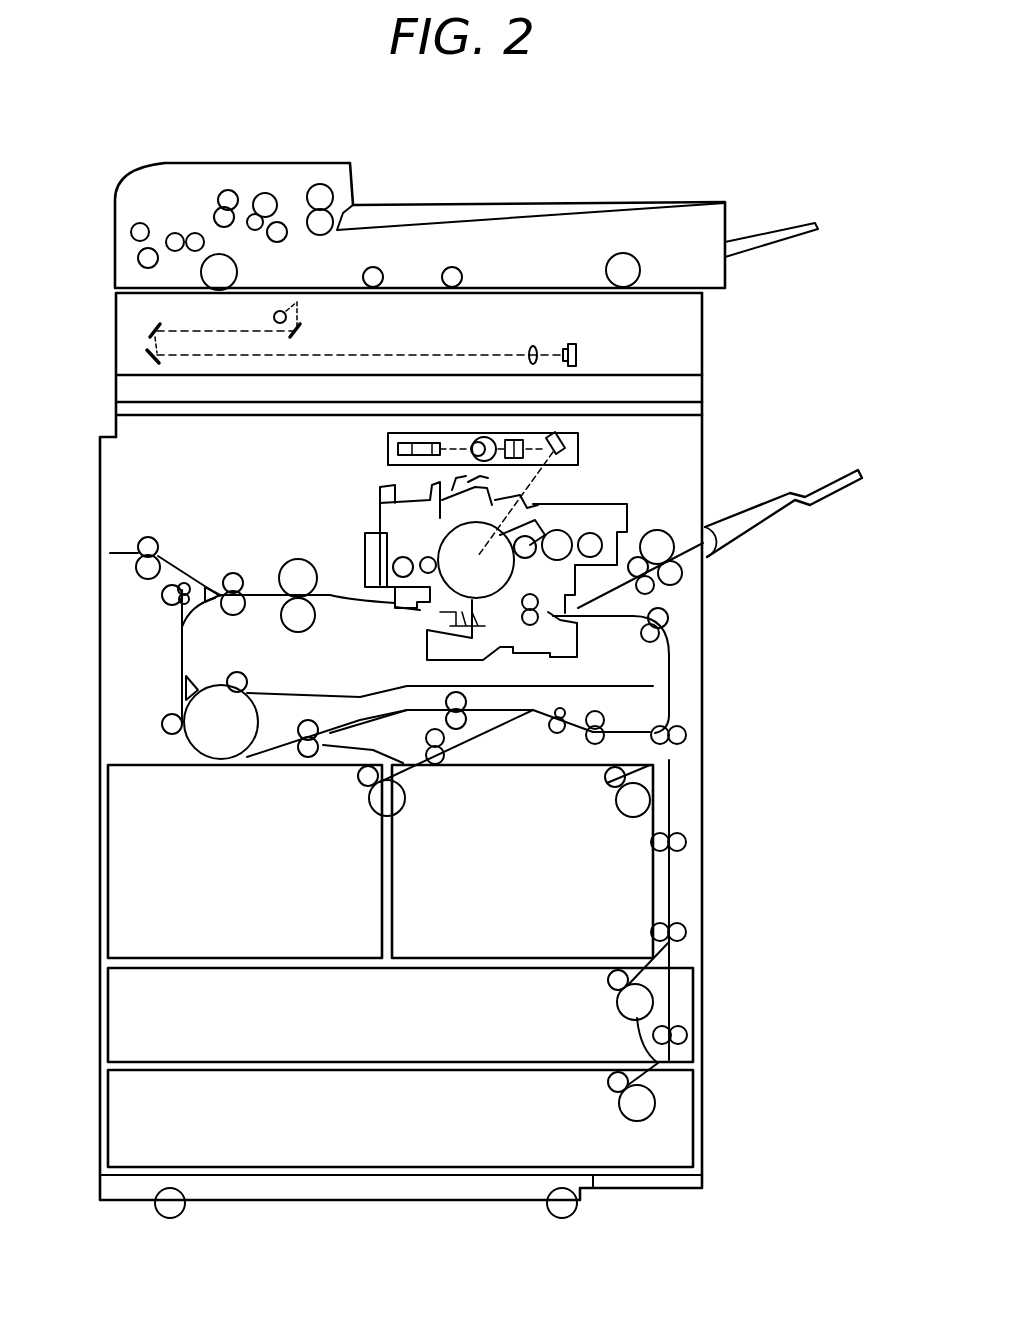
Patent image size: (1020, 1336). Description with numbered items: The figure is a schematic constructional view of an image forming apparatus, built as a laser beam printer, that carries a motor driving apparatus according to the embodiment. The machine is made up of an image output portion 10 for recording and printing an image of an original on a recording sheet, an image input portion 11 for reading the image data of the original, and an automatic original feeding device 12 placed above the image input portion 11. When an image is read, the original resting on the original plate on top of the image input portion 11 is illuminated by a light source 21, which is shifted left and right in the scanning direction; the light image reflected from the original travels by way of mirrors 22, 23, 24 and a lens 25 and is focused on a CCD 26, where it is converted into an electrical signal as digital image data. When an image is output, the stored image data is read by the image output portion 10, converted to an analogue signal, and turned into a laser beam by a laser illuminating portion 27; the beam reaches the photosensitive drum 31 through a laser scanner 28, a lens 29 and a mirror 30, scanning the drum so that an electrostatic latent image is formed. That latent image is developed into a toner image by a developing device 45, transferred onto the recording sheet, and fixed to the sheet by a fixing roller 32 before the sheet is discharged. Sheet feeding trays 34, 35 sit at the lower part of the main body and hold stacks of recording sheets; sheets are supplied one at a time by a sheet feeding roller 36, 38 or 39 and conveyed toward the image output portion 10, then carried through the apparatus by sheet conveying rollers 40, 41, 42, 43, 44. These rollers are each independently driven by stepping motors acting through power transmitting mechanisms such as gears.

The image output portion 10 is at (703, 447).
The image input portion 11 is at (150, 325).
The automatic original feeding device 12 is at (226, 173).
The light source 21 is at (274, 316).
The mirror 22 is at (303, 332).
The mirror 23 is at (148, 330).
The mirror 24 is at (150, 357).
The lens 25 is at (530, 349).
The CCD 26 is at (578, 353).
The laser illuminating portion 27 is at (493, 457).
The laser scanner 28 is at (398, 449).
The lens 29 is at (580, 442).
The mirror 30 is at (580, 456).
The photosensitive drum 31 is at (453, 557).
The fixing roller 32 is at (273, 597).
The sheet feeding tray 34 is at (440, 945).
The sheet feeding tray 35 is at (428, 1130).
The sheet feeding roller 36 is at (660, 530).
The sheet feeding roller 38 is at (645, 1098).
The sheet feeding roller 39 is at (637, 820).
The sheet conveying roller 40 is at (687, 1030).
The sheet conveying roller 41 is at (672, 615).
The sheet conveying roller 42 is at (198, 765).
The sheet conveying roller 43 is at (582, 735).
The sheet conveying roller 44 is at (150, 585).
The developing device 45 is at (604, 504).